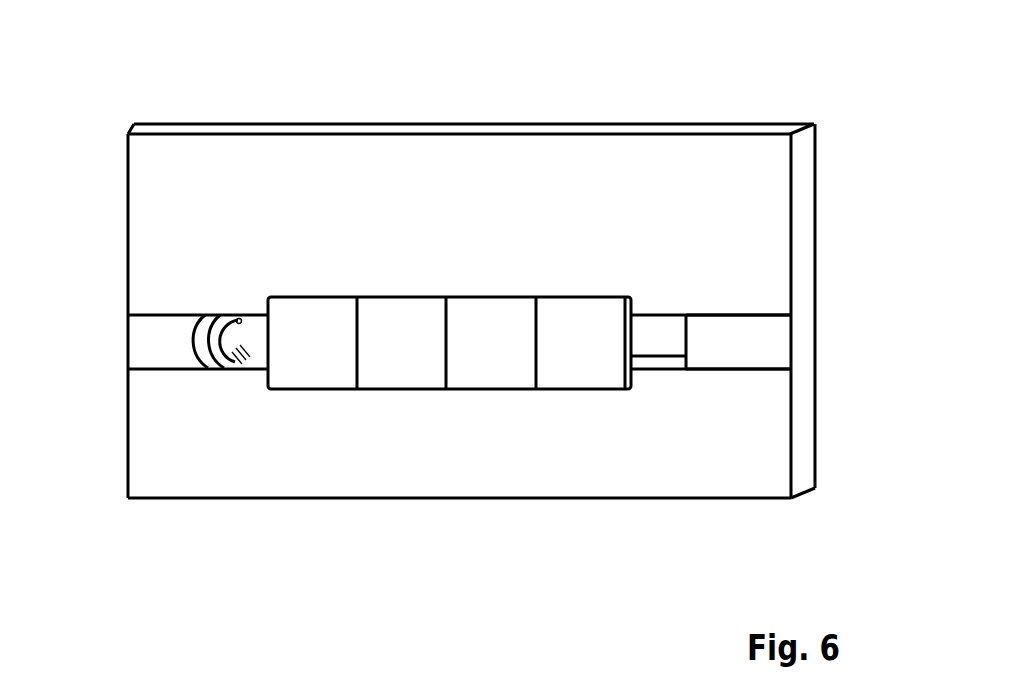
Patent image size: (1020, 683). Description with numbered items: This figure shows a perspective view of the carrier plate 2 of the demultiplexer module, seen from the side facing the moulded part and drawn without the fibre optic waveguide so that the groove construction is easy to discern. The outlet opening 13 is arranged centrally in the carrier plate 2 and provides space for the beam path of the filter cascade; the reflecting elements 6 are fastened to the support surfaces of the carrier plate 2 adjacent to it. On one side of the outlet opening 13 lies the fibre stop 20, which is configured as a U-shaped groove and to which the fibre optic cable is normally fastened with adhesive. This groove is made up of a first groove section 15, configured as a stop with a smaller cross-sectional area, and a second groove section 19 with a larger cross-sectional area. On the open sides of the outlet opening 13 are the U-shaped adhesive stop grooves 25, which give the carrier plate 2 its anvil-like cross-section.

The carrier plate 2 is at (674, 185).
The reflecting elements 6 is at (308, 357).
The outlet opening 13 is at (658, 345).
The first groove section 15 is at (252, 357).
The second groove section 19 is at (212, 374).
The fibre stop 20 is at (222, 337).
The adhesive stop grooves 25 is at (762, 345).